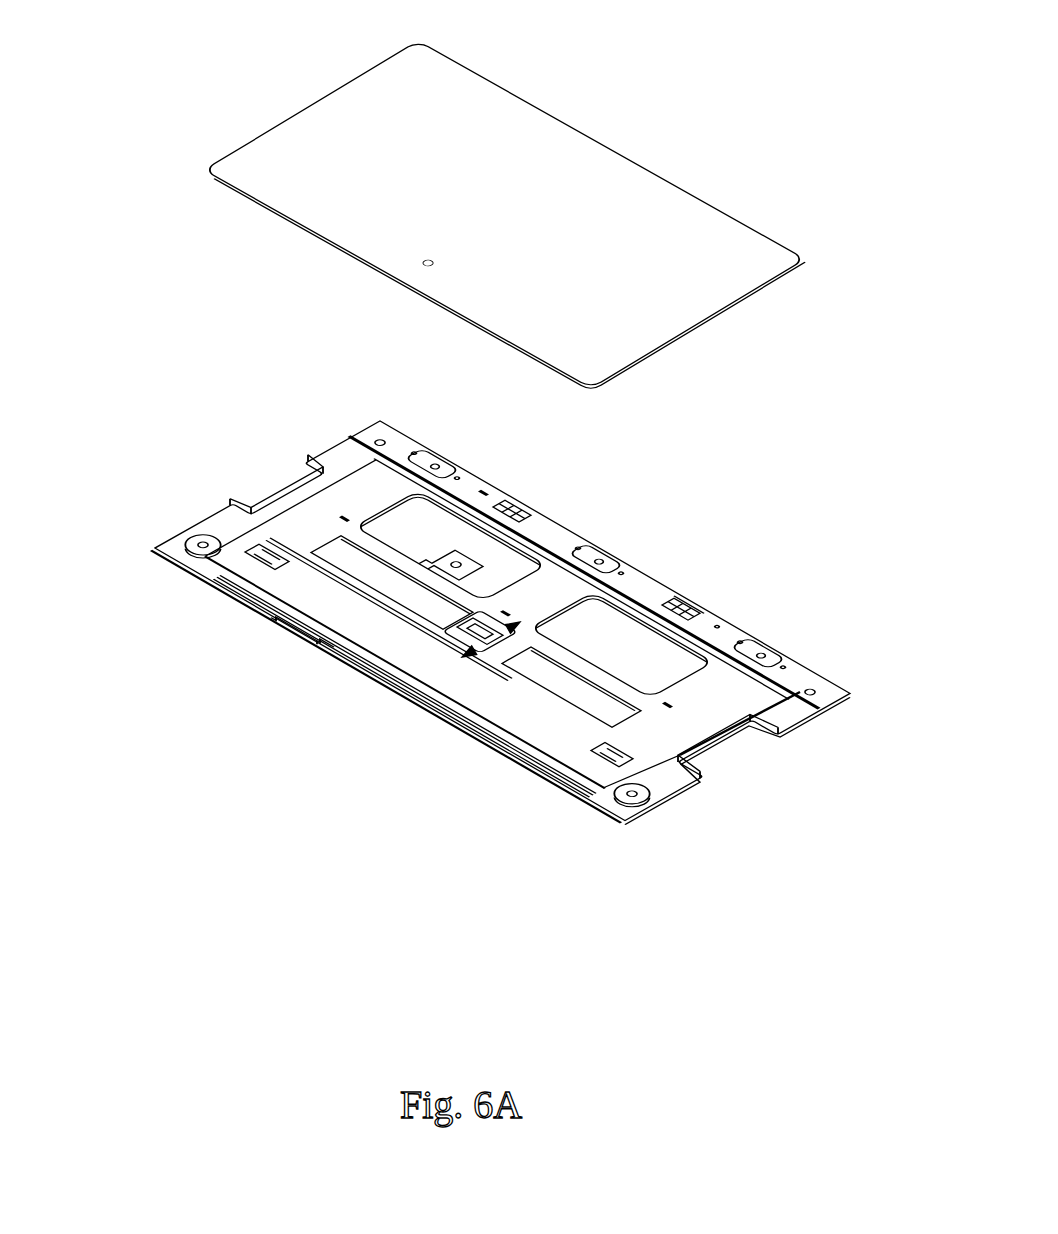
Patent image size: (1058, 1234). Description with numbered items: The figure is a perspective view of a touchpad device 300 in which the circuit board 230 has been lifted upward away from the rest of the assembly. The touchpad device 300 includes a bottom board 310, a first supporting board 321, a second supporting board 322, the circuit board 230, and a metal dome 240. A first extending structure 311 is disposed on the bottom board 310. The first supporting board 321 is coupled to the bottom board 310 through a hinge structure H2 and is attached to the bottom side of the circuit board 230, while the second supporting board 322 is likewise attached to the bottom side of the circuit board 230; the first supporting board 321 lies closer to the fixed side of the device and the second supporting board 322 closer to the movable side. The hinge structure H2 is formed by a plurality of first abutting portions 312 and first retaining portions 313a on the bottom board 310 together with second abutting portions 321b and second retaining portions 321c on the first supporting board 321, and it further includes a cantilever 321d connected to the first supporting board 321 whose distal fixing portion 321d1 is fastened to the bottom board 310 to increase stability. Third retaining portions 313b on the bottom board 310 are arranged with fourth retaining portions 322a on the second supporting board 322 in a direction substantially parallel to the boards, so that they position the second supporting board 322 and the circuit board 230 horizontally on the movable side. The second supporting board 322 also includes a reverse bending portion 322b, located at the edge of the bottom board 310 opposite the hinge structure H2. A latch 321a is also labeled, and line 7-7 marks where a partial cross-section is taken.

The touchpad device 300 is at (200, 33).
The circuit board 230 is at (712, 334).
The metal dome 240 is at (424, 265).
The bottom board 310 is at (718, 738).
The first extending structure 311 is at (352, 664).
The first abutting portion 312 is at (697, 601).
The first retaining portion 313a is at (740, 640).
The third retaining portion 313b is at (603, 753).
The first supporting board 321 is at (762, 648).
The latch 321a is at (458, 620).
The second abutting portion 321b is at (690, 600).
The second retaining portion 321c is at (718, 606).
The cantilever 321d is at (768, 656).
The fixing portion 321d1 is at (773, 660).
The second supporting board 322 is at (470, 703).
The fourth retaining portion 322a is at (578, 766).
The reverse bending portion 322b is at (485, 733).
The line 7- 7 is at (558, 650).
The hinge structure H2 is at (98, 818).